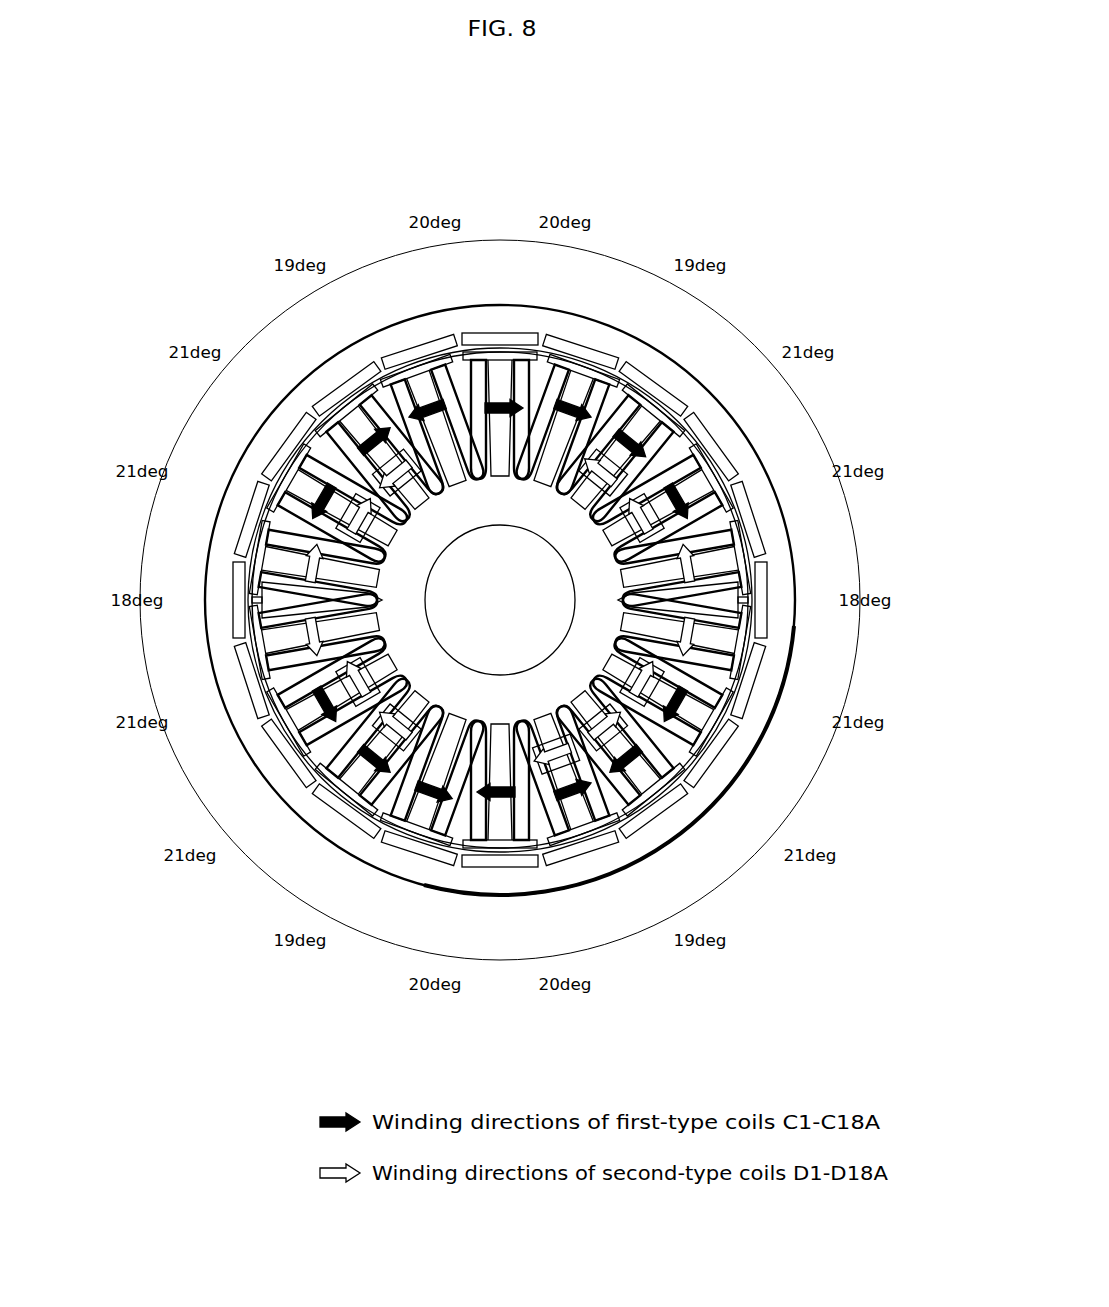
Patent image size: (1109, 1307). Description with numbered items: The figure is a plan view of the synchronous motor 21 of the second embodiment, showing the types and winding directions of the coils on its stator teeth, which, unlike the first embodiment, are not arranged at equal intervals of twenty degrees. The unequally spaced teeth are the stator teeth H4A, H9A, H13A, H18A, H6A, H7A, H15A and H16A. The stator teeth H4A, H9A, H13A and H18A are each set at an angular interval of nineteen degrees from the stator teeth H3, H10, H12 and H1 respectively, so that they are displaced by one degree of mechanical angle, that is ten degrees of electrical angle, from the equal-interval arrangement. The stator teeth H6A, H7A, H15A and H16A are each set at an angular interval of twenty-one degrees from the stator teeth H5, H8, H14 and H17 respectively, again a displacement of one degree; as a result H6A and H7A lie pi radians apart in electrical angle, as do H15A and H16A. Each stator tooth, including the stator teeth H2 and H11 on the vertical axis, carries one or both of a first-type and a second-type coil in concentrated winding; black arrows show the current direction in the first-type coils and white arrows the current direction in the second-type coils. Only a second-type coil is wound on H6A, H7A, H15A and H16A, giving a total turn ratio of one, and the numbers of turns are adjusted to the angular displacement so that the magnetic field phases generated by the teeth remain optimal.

The synchronous motor 21 is at (491, 138).
The stator tooth H1 is at (580, 379).
The stator tooth H2 is at (502, 365).
The stator tooth H3 is at (420, 379).
The stator tooth H4A is at (352, 417).
The stator tooth H5 is at (296, 482).
The stator tooth H6A is at (269, 559).
The stator tooth H7A is at (269, 641).
The stator tooth H8 is at (296, 718).
The stator tooth H9A is at (352, 783).
The stator tooth H10 is at (420, 821).
The stator tooth H11 is at (500, 835).
The stator tooth H12 is at (580, 821).
The stator tooth H13A is at (648, 783).
The stator tooth H14 is at (704, 718).
The stator tooth H15A is at (731, 641).
The stator tooth H16A is at (731, 559).
The stator tooth H17 is at (704, 482).
The stator tooth H18A is at (648, 417).